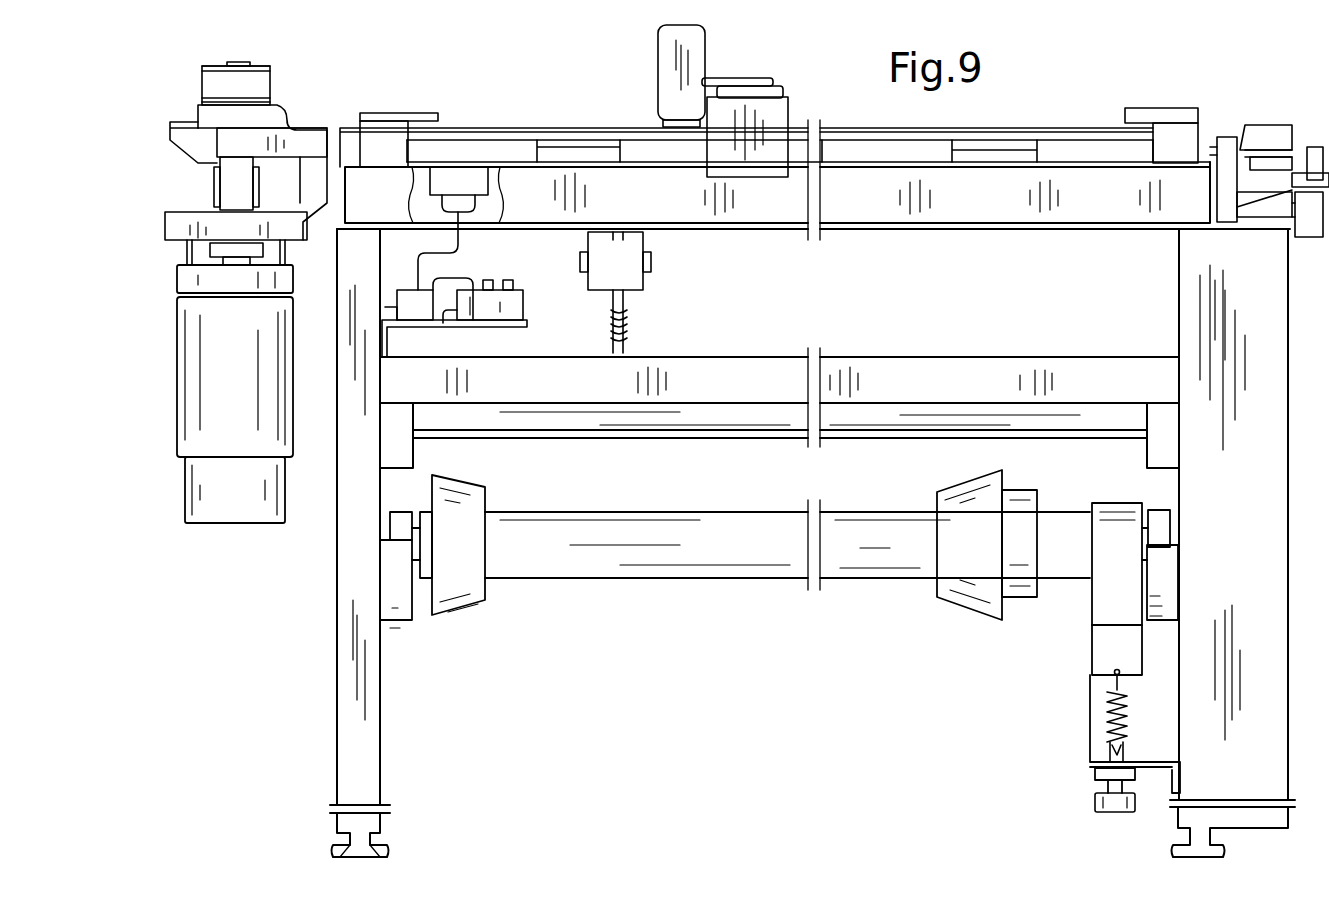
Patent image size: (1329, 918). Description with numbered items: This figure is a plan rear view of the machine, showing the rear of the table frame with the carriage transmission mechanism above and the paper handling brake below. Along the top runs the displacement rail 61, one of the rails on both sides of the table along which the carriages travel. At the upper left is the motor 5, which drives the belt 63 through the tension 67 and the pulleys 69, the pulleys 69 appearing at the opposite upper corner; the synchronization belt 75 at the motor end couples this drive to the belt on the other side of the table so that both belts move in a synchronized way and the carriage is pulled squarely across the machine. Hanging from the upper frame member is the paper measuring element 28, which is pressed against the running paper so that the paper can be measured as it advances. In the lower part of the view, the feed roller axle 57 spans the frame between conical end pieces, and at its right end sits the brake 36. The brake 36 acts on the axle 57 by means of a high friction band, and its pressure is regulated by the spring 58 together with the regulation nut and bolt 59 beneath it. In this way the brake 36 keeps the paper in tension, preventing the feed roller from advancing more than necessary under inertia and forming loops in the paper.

The motor 5 is at (200, 367).
The paper measuring element 28 is at (630, 320).
The brake 36 is at (1090, 645).
The axle 57 is at (1100, 518).
The spring 58 is at (1108, 722).
The regulation nut and bolt 59 is at (1098, 800).
The displacement rail 61 is at (583, 137).
The belt 63 is at (242, 150).
The tension 67 is at (268, 70).
The pulleys 69 is at (1280, 122).
The synchronization belt 75 is at (220, 92).